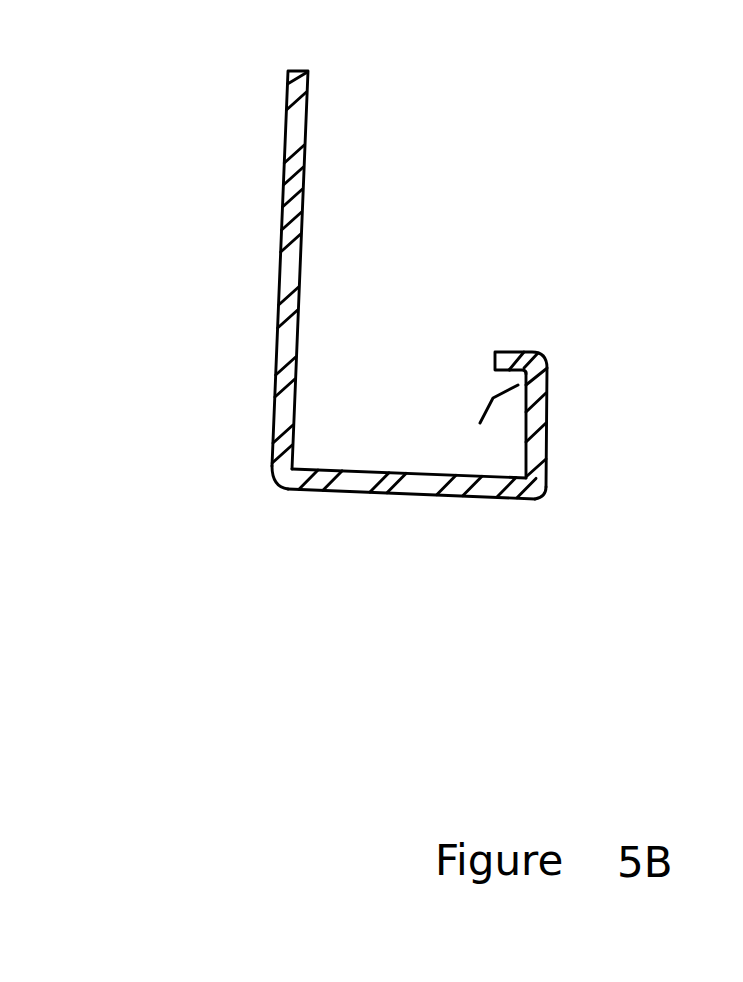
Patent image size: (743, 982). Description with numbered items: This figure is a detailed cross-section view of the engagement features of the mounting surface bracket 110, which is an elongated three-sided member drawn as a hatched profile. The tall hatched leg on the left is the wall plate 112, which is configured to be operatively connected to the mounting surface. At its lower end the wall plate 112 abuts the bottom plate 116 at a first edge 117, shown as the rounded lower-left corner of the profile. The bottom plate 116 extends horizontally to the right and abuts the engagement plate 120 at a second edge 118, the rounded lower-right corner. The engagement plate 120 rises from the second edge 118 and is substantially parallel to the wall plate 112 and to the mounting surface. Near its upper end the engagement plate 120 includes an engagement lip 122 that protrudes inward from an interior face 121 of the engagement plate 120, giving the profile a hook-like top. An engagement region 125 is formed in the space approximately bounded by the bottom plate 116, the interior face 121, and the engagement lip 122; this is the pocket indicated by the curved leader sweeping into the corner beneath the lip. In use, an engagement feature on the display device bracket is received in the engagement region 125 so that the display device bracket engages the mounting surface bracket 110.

The mounting surface bracket 110 is at (483, 92).
The wall plate 112 is at (290, 203).
The bottom plate 116 is at (410, 483).
The first edge 117 is at (280, 472).
The second edge 118 is at (534, 493).
The engagement plate 120 is at (548, 410).
The interior face 121 is at (527, 410).
The engagement lip 122 is at (515, 354).
The engagement region 125 is at (493, 398).